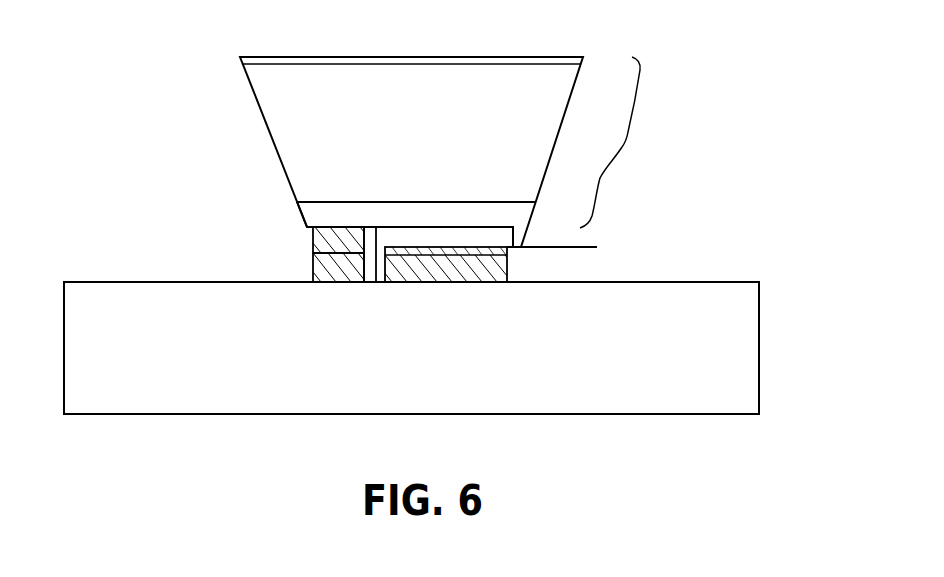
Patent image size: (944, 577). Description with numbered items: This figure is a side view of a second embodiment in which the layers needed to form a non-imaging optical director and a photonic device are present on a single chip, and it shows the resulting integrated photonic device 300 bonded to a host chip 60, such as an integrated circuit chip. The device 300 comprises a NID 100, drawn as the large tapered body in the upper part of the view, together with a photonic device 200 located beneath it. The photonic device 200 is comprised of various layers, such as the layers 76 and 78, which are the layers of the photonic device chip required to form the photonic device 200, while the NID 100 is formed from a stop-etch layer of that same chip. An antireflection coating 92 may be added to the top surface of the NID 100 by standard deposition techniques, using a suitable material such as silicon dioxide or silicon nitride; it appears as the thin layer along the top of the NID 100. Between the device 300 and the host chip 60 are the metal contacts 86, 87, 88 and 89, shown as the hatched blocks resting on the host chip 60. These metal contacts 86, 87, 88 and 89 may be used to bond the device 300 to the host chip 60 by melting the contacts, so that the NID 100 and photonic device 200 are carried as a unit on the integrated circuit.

The host chip 60 is at (759, 380).
The NID 100 is at (252, 87).
The antireflection coating 92 is at (258, 57).
The layer 76 is at (302, 215).
The metal contact 87 is at (313, 236).
The metal contact 89 is at (313, 274).
The layer 78 is at (383, 237).
The metal contact 88 is at (507, 270).
The metal contact 86 is at (597, 247).
The photonic device 200 is at (530, 228).
The integrated photonic device 300 is at (622, 147).